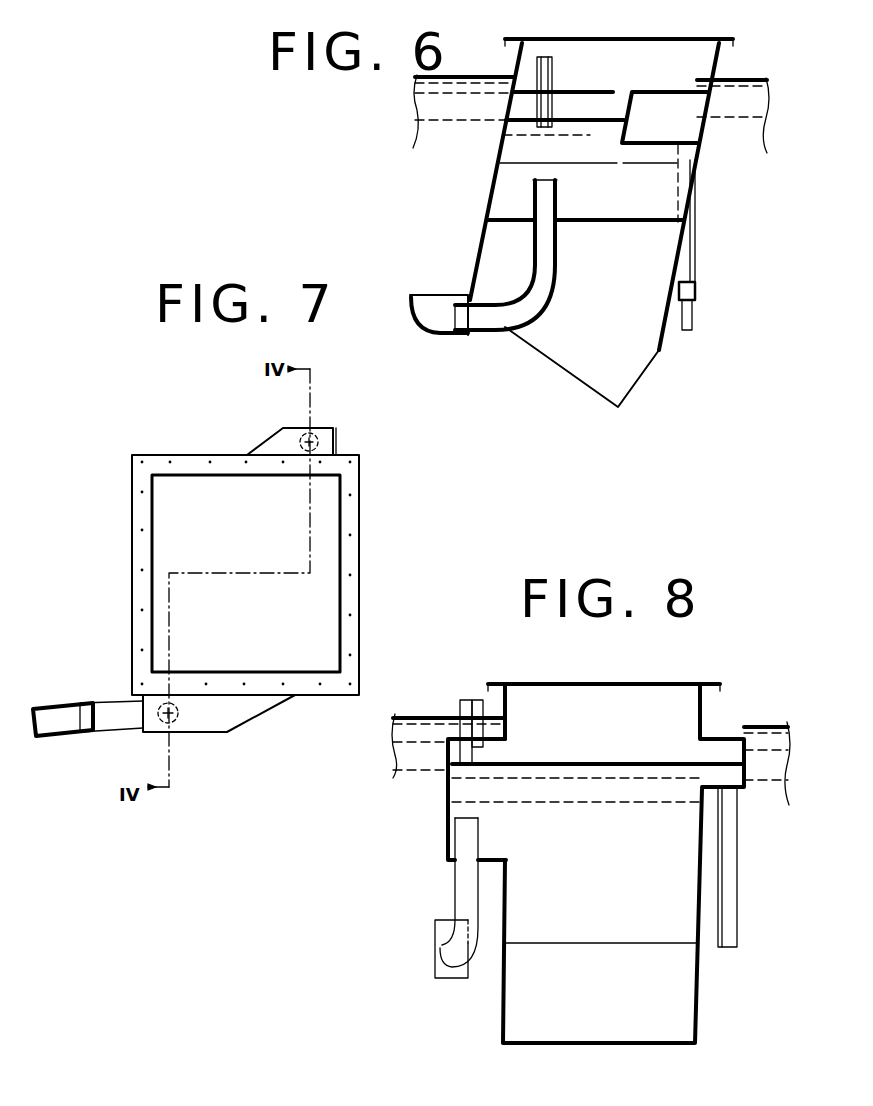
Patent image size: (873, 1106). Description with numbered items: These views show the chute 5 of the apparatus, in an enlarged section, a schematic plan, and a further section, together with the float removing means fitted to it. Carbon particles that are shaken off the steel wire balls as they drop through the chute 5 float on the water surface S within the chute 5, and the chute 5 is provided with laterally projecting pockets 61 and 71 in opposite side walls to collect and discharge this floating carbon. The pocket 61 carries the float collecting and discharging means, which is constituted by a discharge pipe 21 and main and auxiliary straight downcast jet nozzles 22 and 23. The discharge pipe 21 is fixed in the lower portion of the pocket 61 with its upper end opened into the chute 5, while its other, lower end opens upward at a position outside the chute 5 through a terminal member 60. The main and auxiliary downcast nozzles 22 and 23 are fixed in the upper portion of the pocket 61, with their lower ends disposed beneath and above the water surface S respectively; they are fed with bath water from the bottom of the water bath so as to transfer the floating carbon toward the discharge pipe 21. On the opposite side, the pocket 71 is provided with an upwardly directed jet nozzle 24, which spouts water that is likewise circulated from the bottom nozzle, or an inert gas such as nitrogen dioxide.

In FIG. 6, the chute 5 is at (490, 166).
In FIG. 7, the chute 5 is at (364, 568).
In FIG. 8, the chute 5 is at (700, 1000).
In FIG. 6, the discharge pipe 21 is at (557, 205).
In FIG. 7, the discharge pipe 21 is at (115, 702).
In FIG. 8, the discharge pipe 21 is at (456, 880).
In FIG. 6, the main straight downcast jet nozzle 22 is at (554, 68).
In FIG. 8, the main straight downcast jet nozzle 22 is at (465, 698).
In FIG. 8, the auxiliary straight downcast jet nozzle 23 is at (480, 698).
In FIG. 6, the upwardly directed jet nozzle 24 is at (700, 257).
In FIG. 7, the upwardly directed jet nozzle 24 is at (318, 427).
In FIG. 8, the upwardly directed jet nozzle 24 is at (740, 866).
In FIG. 6, the terminal member 60 is at (415, 312).
In FIG. 7, the terminal member 60 is at (58, 705).
In FIG. 8, the terminal member 60 is at (435, 940).
In FIG. 7, the pocket 61 is at (252, 712).
In FIG. 8, the pocket 61 is at (447, 790).
In FIG. 6, the pocket 71 is at (672, 102).
In FIG. 7, the pocket 71 is at (336, 443).
In FIG. 8, the pocket 71 is at (723, 752).
In FIG. 6, the water surface S is at (607, 95).
In FIG. 8, the water surface S is at (620, 762).